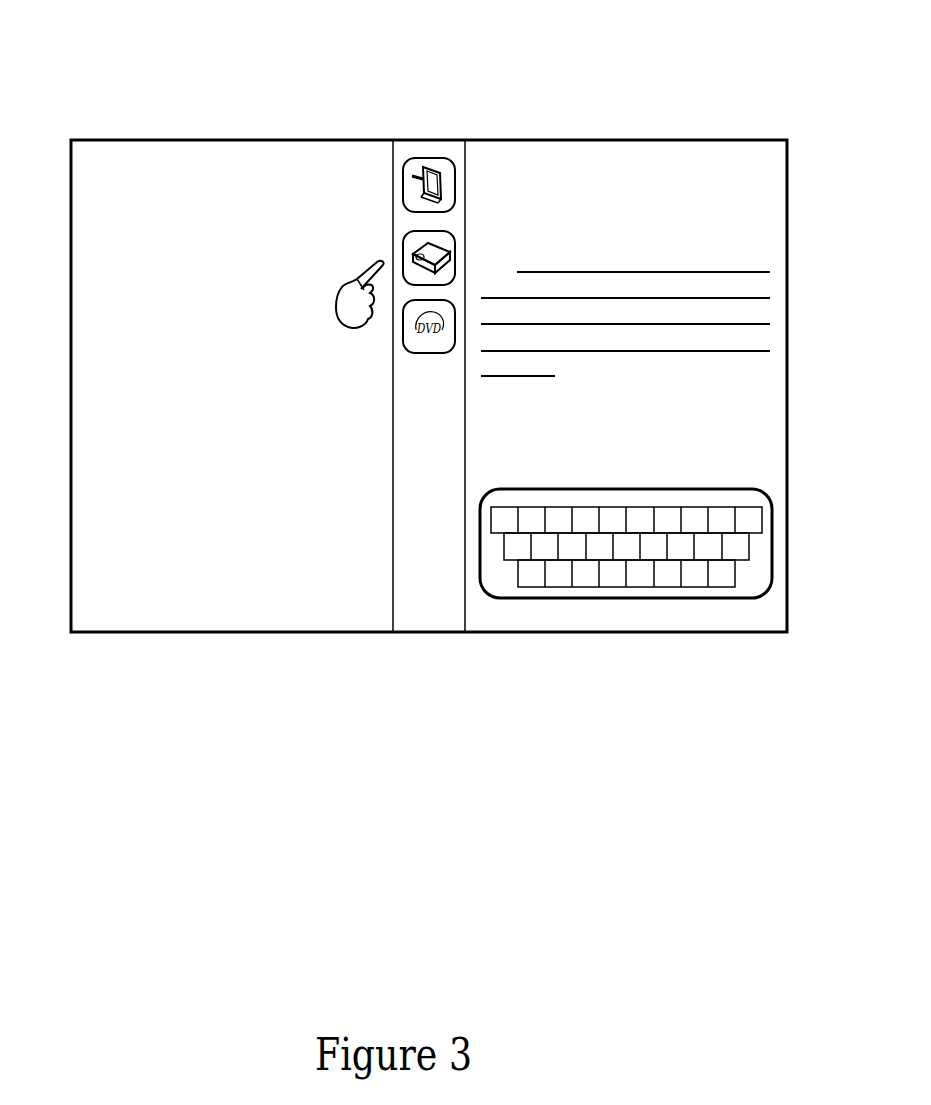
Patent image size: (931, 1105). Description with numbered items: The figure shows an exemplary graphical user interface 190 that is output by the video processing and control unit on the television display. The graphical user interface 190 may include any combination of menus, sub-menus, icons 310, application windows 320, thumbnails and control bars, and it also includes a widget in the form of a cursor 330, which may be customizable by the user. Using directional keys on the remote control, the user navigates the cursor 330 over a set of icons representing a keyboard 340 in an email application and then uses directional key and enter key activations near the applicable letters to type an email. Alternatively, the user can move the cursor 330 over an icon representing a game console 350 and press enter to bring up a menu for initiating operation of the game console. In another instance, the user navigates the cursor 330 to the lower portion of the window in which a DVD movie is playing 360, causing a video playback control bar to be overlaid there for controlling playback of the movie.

The graphical user interface 190 is at (807, 26).
The icons 310 is at (381, 327).
The application windows 320 is at (622, 227).
The cursor 330 is at (278, 201).
The keyboard 340 is at (597, 598).
The game console 350 is at (367, 180).
The DVD movie playing 360 is at (234, 533).